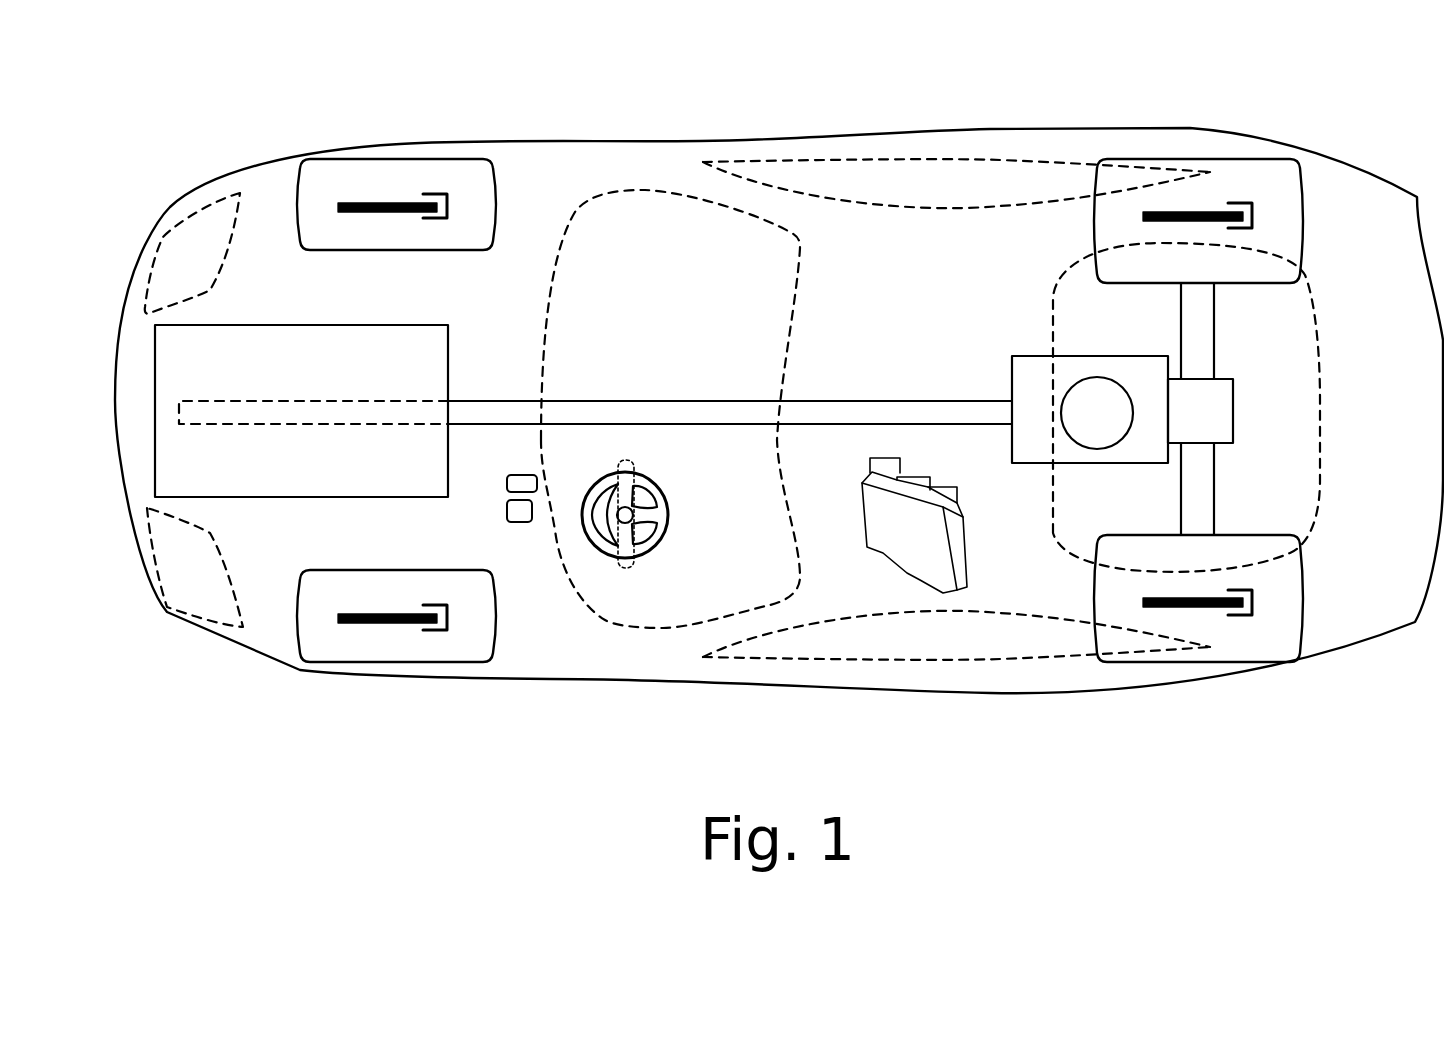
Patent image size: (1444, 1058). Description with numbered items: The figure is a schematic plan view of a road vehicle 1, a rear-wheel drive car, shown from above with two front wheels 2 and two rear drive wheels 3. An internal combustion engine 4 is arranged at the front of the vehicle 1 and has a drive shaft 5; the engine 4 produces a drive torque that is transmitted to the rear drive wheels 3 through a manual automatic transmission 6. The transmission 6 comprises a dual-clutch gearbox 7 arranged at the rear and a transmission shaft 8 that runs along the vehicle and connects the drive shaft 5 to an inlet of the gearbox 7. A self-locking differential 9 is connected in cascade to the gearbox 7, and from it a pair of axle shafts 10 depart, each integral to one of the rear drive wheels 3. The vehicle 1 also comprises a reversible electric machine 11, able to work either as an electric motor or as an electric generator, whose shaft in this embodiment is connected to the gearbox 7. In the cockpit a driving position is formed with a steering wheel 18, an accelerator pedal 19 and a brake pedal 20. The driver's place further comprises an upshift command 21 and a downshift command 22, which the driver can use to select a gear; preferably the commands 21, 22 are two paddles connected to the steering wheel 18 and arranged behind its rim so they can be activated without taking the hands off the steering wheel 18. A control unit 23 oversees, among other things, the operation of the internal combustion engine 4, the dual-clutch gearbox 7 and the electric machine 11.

The road vehicle 1 is at (1317, 772).
The front wheels 2 is at (325, 177).
The rear drive wheels 3 is at (1283, 175).
The internal combustion engine 4 is at (165, 352).
The drive shaft 5 is at (283, 417).
The manual automatic transmission 6 is at (820, 112).
The dual-clutch gearbox 7 is at (1077, 365).
The transmission shaft 8 is at (842, 415).
The self-locking differential 9 is at (1200, 412).
The axle shafts 10 is at (1200, 347).
The reversible electric machine 11 is at (1097, 413).
The steering wheel 18 is at (653, 516).
The accelerator pedal 19 is at (523, 482).
The brake pedal 20 is at (518, 522).
The upshift command 21 is at (635, 463).
The downshift command 22 is at (635, 567).
The control unit 23 is at (914, 525).